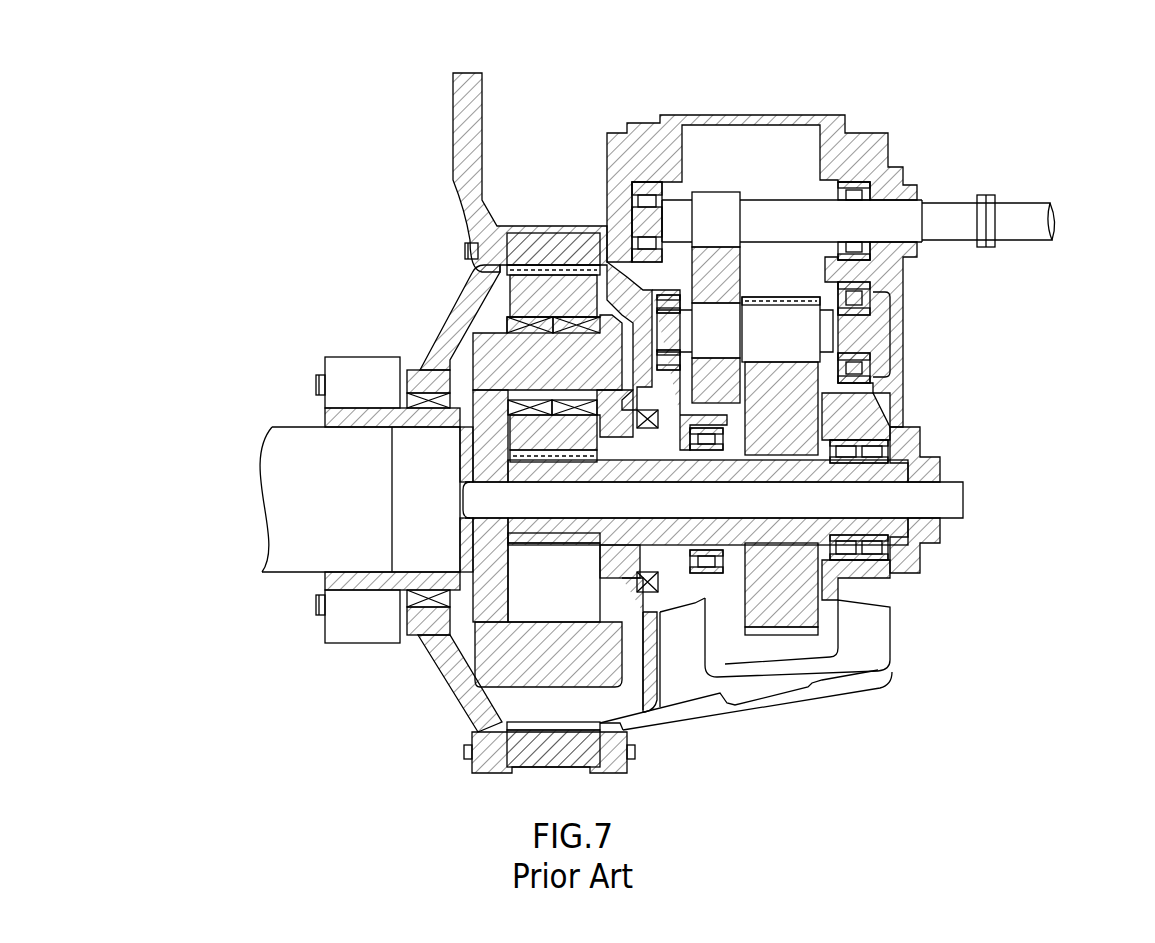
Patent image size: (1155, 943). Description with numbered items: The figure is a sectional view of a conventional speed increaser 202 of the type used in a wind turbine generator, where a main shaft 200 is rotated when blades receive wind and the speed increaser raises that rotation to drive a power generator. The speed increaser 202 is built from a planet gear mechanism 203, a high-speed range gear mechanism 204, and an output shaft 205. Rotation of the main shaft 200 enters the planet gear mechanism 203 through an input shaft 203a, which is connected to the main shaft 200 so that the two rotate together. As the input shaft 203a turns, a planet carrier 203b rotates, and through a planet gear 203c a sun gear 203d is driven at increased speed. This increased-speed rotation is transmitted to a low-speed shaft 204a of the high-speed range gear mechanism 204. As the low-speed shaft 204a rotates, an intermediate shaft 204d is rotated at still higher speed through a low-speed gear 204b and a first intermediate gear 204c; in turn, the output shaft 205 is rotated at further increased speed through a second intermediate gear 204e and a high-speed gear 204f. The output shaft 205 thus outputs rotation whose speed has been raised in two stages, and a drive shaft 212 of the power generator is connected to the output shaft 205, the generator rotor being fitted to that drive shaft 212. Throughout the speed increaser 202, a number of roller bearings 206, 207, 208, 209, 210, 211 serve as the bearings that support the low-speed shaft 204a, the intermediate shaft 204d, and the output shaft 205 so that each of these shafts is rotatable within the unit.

The main shaft 200 is at (278, 523).
The speed increaser 202 is at (660, 745).
The planet gear mechanism 203 is at (494, 302).
The input shaft 203a is at (337, 418).
The planet carrier 203b is at (480, 422).
The planet gear 203c is at (513, 290).
The sun gear 203d is at (527, 535).
The high-speed range gear mechanism 204 is at (826, 656).
The low-speed shaft 204a is at (897, 472).
The low-speed gear 204b is at (800, 607).
The first intermediate gear 204c is at (850, 325).
The intermediate shaft 204d is at (857, 335).
The second intermediate gear 204e is at (737, 266).
The high-speed gear 204f is at (718, 208).
The output shaft 205 is at (946, 208).
The roller bearing 206 is at (713, 572).
The roller bearing 207 is at (868, 560).
The roller bearing 208 is at (633, 290).
The roller bearing 209 is at (873, 377).
The roller bearing 210 is at (627, 178).
The roller bearing 211 is at (870, 182).
The drive shaft 212 is at (1030, 207).